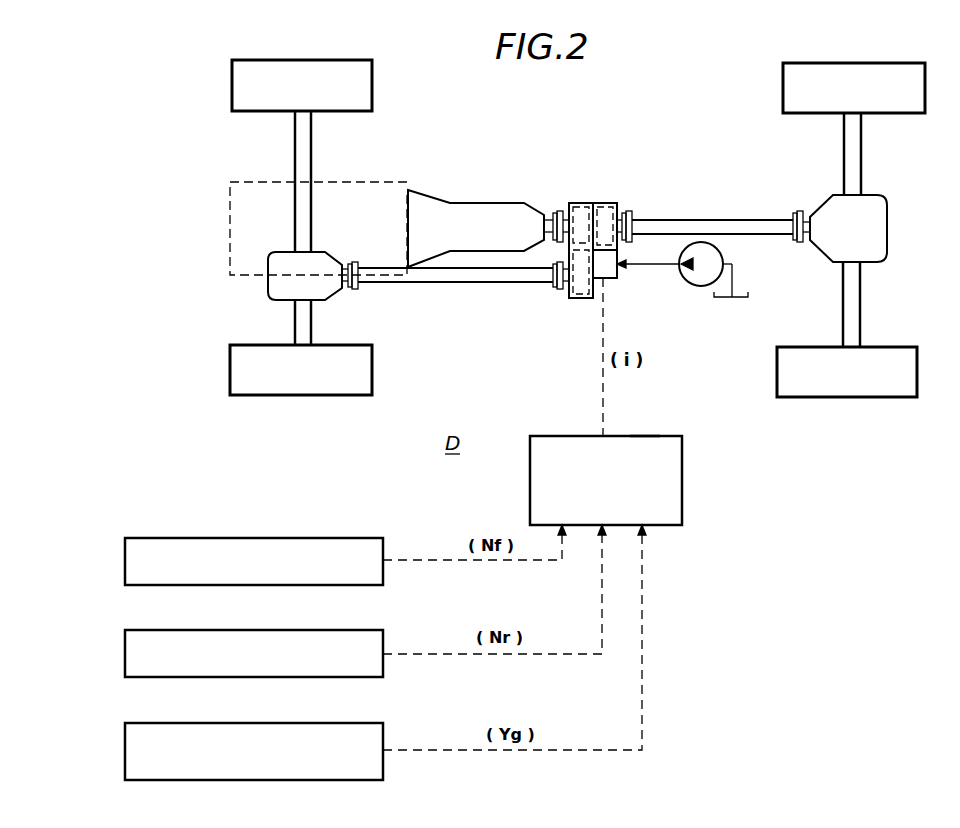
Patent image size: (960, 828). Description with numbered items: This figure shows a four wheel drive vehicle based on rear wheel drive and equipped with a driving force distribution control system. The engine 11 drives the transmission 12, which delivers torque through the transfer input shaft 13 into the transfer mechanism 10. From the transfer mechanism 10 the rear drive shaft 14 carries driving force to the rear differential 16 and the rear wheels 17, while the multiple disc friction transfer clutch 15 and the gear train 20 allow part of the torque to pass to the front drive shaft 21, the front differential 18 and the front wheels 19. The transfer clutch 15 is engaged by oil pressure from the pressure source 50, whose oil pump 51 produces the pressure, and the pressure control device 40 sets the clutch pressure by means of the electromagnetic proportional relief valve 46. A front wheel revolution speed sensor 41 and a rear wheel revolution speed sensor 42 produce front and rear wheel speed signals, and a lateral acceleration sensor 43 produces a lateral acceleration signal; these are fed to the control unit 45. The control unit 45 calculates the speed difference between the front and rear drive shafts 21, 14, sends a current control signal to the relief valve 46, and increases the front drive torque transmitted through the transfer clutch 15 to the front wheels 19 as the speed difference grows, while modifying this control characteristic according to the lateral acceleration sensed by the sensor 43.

The transfer mechanism 10 is at (578, 203).
The engine 11 is at (352, 180).
The transmission 12 is at (467, 203).
The transfer input shaft 13 is at (546, 212).
The rear drive shaft 14 is at (690, 220).
The multiple disc friction transfer clutch 15 is at (612, 203).
The rear differential 16 is at (880, 200).
The rear wheels 17 is at (905, 347).
The front differential 18 is at (268, 288).
The front wheels 19 is at (228, 355).
The gear train 20 is at (578, 298).
The front drive shaft 21 is at (471, 283).
The pressure control device 40 is at (558, 424).
The front wheel revolution speed sensor 41 is at (125, 560).
The rear wheel revolution speed sensor 42 is at (125, 652).
The lateral acceleration sensor 43 is at (125, 744).
The control unit 45 is at (643, 436).
The electromagnetic proportional relief valve 46 is at (617, 278).
The pressure source 50 is at (714, 338).
The oil pump 51 is at (722, 262).